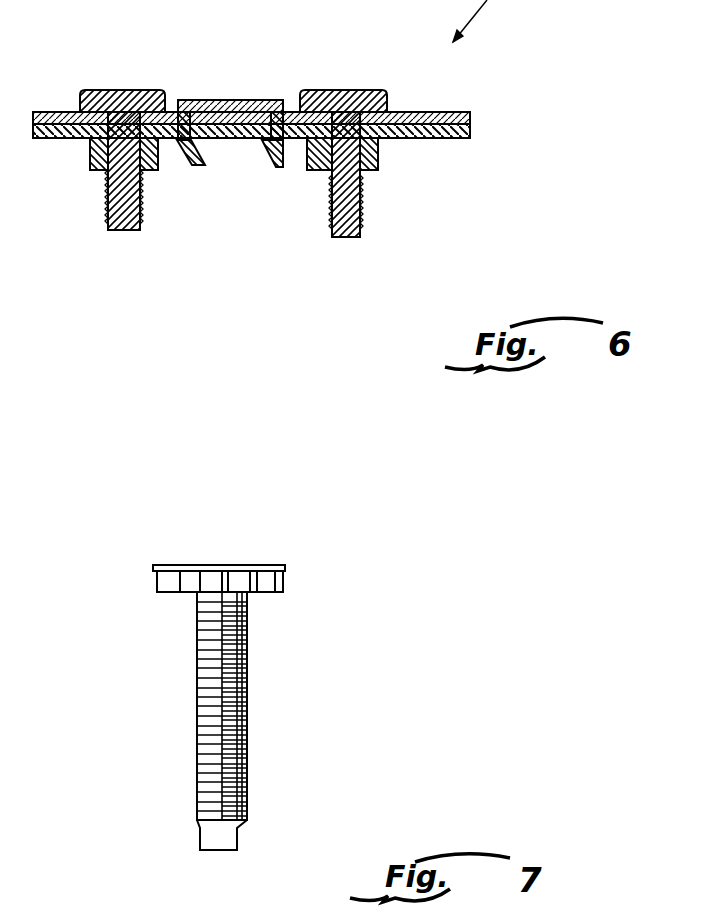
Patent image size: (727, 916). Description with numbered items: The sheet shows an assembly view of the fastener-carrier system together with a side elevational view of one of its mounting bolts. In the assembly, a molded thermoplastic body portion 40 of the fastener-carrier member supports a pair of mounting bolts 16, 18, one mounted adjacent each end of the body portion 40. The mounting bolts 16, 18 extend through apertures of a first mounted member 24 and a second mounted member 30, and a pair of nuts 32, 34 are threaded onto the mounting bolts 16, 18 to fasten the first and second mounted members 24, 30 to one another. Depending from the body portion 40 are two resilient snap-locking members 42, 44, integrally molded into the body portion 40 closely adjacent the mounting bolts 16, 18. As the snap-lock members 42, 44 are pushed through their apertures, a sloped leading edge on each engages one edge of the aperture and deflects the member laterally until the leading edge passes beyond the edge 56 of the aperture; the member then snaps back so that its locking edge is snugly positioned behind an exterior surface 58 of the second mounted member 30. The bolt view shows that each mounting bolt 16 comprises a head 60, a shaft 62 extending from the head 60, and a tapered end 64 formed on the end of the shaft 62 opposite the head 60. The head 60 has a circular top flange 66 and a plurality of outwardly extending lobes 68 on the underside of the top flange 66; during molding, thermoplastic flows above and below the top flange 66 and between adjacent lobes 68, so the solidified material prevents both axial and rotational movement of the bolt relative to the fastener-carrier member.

In FIG. 6, the mounting bolt 16 is at (143, 216).
In FIG. 7, the mounting bolt 16 is at (232, 721).
In FIG. 6, the mounting bolt 18 is at (328, 203).
In FIG. 6, the first mounted member 24 is at (445, 110).
In FIG. 6, the second mounted member 30 is at (437, 138).
In FIG. 6, the nut 32 is at (92, 170).
In FIG. 6, the nut 34 is at (367, 172).
In FIG. 6, the body portion 40 is at (246, 132).
In FIG. 6, the snap-locking member 42 is at (195, 162).
In FIG. 6, the snap-locking member 44 is at (278, 162).
In FIG. 6, the edge of the aperture 56 is at (182, 100).
In FIG. 6, the exterior surface 58 is at (227, 140).
In FIG. 7, the head 60 is at (257, 579).
In FIG. 7, the shaft 62 is at (195, 765).
In FIG. 7, the tapered end 64 is at (240, 842).
In FIG. 7, the circular top flange 66 is at (208, 565).
In FIG. 7, the lobes 68 is at (173, 592).